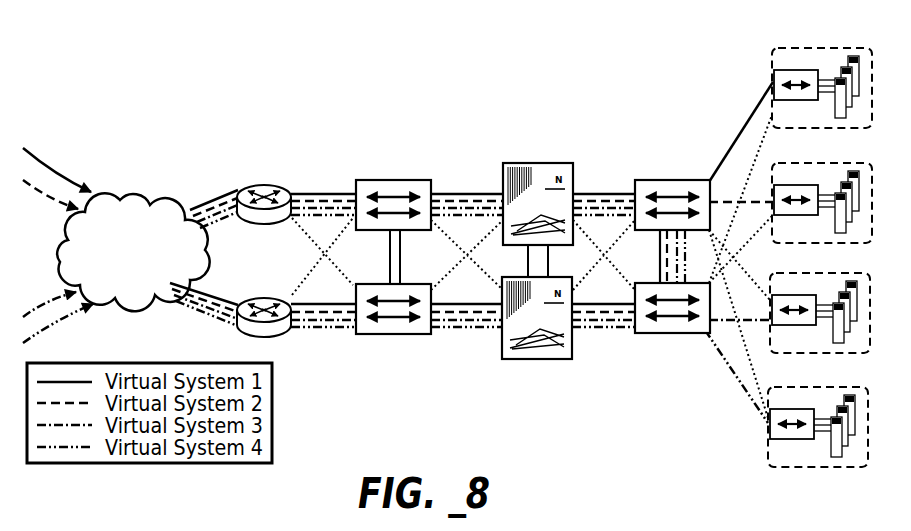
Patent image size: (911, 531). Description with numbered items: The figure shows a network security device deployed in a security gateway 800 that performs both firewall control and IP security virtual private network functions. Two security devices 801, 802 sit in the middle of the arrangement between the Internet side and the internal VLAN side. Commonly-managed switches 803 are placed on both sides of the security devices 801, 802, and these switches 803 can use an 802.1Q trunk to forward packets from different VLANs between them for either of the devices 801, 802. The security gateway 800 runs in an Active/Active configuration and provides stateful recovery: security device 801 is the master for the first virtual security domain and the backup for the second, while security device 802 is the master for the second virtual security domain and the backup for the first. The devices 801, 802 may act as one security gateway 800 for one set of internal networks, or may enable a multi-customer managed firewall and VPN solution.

The security gateway 800 is at (400, 110).
The security device 801 is at (502, 190).
The security device 802 is at (502, 338).
The commonly-managed switches 803 is at (383, 180).